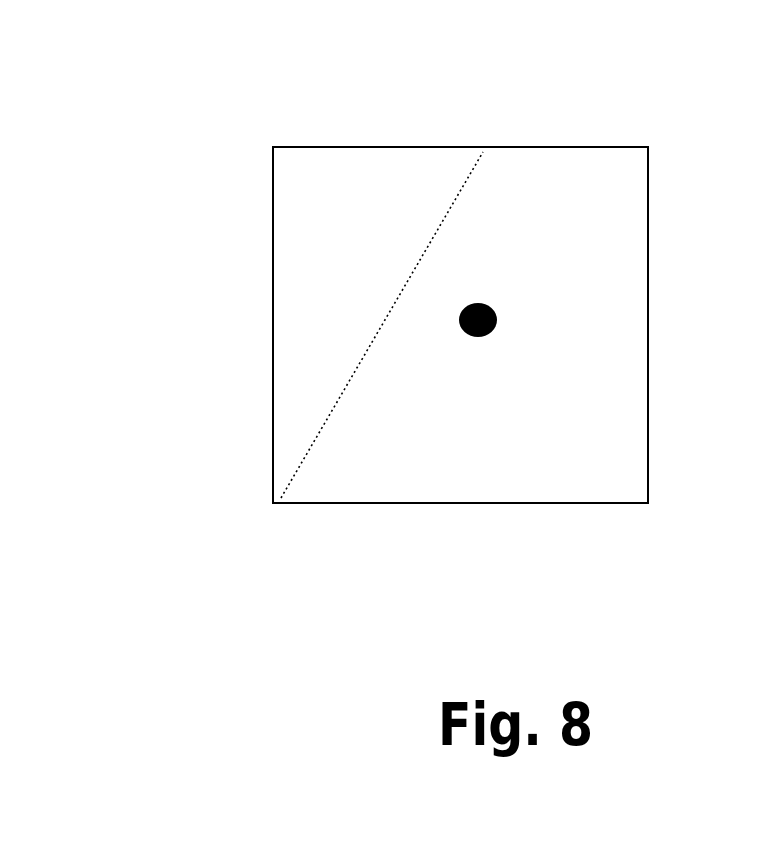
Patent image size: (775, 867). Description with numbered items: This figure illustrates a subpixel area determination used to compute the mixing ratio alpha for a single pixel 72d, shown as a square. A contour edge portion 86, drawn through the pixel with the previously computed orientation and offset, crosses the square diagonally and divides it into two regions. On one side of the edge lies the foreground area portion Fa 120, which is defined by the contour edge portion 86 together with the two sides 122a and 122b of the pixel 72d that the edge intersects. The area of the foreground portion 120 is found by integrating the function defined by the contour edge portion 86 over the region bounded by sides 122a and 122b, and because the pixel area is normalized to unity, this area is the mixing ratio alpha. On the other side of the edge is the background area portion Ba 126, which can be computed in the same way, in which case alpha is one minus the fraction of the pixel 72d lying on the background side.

The pixel 72d is at (613, 502).
The contour edge portion 86 is at (327, 413).
The foreground area portion Fa 120 is at (322, 195).
The side of the pixel 122a is at (272, 287).
The side of the pixel 122b is at (422, 147).
The background area portion Ba 126 is at (610, 342).